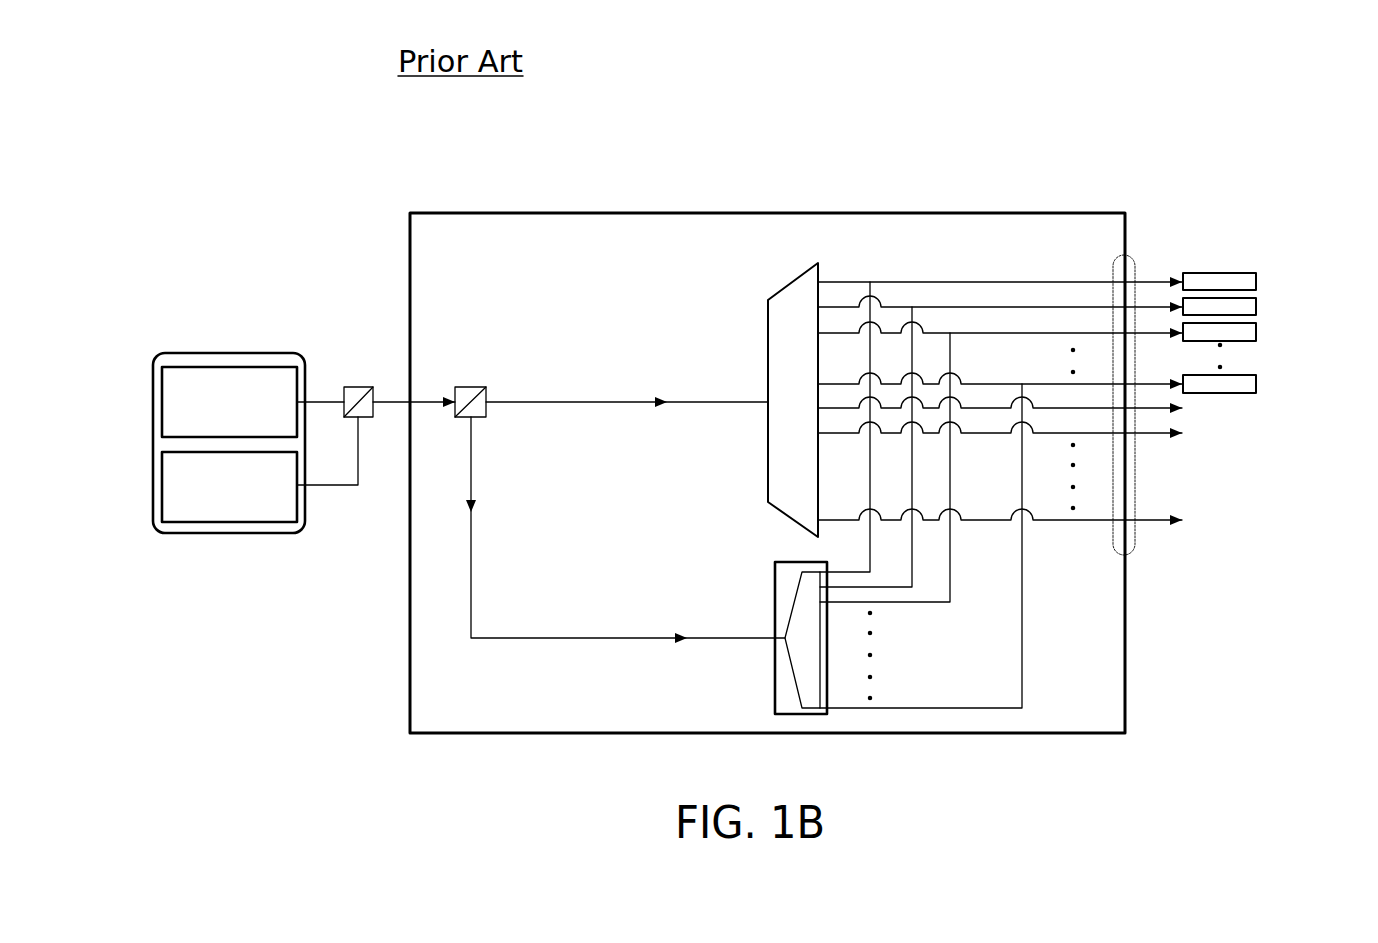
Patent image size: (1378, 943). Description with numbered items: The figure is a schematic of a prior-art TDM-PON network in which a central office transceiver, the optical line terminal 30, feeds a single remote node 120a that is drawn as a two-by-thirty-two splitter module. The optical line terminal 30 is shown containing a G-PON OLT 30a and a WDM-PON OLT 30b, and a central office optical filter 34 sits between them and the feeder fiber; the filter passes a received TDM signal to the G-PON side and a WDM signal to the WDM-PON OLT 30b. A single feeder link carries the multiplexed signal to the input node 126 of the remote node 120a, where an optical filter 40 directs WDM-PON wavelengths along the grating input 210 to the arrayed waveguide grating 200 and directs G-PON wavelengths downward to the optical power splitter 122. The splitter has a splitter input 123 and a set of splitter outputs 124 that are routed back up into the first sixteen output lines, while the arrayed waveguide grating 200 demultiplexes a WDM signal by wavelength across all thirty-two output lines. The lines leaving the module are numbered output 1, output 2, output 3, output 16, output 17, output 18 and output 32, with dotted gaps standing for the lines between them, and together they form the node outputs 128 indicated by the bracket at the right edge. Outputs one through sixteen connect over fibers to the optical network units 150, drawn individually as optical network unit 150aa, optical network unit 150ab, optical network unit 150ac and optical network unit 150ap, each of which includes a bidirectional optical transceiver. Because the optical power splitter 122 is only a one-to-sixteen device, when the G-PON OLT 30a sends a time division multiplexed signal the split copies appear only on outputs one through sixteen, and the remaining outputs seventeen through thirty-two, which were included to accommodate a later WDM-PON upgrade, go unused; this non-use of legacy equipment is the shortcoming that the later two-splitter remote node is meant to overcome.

The optical line terminal 30 is at (243, 445).
The G-PON OLT 30a is at (276, 362).
The WDM-PON OLT 30b is at (172, 532).
The central office optical filter 34 is at (362, 420).
The input node 126 is at (407, 400).
The remote node 120a is at (821, 213).
The optical filter 40 is at (462, 388).
The grating input 210 is at (768, 406).
The arrayed waveguide grating 200 is at (768, 326).
The optical power splitter 122 is at (775, 580).
The splitter input 123 is at (775, 640).
The splitter outputs 124 is at (826, 710).
The output 1 is at (1000, 274).
The output 2 is at (1000, 299).
The output 3 is at (1000, 326).
The output 16 is at (1000, 376).
The output 17 is at (1000, 401).
The output 18 is at (1000, 426).
The output 32 is at (1000, 511).
The node outputs 128 is at (1135, 545).
The optical network units 150 is at (1268, 334).
The optical network unit 150aa is at (1257, 283).
The optical network unit 150ab is at (1257, 308).
The optical network unit 150ac is at (1257, 334).
The optical network unit 150ap is at (1257, 385).